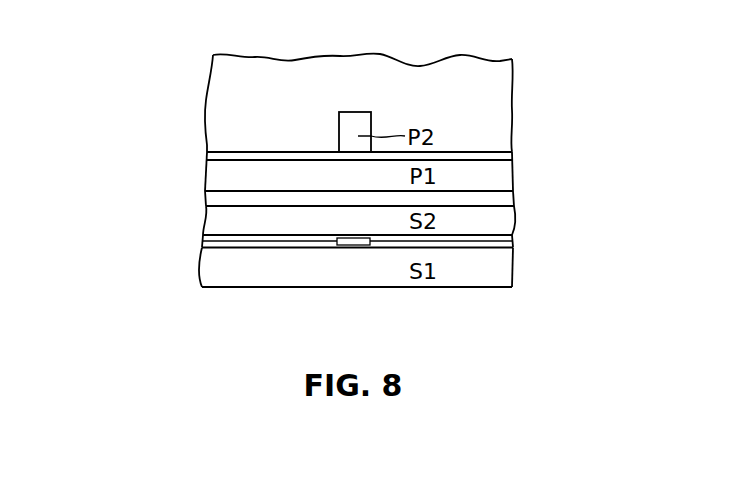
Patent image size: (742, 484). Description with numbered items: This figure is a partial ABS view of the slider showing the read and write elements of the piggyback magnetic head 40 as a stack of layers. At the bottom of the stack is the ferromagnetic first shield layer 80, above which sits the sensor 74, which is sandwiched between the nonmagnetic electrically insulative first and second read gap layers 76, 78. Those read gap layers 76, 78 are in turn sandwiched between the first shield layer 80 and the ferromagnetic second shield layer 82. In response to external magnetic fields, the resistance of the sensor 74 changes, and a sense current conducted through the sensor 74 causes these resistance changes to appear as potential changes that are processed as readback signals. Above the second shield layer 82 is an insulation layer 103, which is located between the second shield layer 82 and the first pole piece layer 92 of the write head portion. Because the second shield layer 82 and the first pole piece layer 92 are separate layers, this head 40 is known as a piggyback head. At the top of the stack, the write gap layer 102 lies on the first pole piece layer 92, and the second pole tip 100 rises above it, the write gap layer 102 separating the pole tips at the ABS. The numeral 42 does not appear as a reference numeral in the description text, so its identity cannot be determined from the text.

The piggyback magnetic head 40 is at (527, 74).
The upper region 42 is at (217, 84).
The second pole tip 100 is at (353, 118).
The write gap layer 102 is at (276, 150).
The first pole piece layer 92 is at (215, 173).
The insulation layer 103 is at (503, 202).
The second shield layer 82 is at (210, 223).
The second read gap layer 78 is at (473, 241).
The sensor 74 is at (352, 246).
The first read gap layer 76 is at (265, 248).
The first shield layer 80 is at (500, 276).